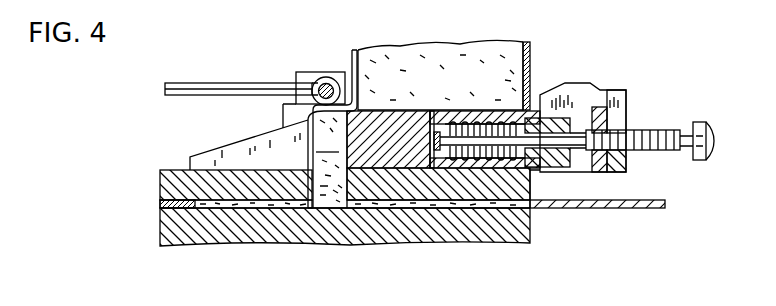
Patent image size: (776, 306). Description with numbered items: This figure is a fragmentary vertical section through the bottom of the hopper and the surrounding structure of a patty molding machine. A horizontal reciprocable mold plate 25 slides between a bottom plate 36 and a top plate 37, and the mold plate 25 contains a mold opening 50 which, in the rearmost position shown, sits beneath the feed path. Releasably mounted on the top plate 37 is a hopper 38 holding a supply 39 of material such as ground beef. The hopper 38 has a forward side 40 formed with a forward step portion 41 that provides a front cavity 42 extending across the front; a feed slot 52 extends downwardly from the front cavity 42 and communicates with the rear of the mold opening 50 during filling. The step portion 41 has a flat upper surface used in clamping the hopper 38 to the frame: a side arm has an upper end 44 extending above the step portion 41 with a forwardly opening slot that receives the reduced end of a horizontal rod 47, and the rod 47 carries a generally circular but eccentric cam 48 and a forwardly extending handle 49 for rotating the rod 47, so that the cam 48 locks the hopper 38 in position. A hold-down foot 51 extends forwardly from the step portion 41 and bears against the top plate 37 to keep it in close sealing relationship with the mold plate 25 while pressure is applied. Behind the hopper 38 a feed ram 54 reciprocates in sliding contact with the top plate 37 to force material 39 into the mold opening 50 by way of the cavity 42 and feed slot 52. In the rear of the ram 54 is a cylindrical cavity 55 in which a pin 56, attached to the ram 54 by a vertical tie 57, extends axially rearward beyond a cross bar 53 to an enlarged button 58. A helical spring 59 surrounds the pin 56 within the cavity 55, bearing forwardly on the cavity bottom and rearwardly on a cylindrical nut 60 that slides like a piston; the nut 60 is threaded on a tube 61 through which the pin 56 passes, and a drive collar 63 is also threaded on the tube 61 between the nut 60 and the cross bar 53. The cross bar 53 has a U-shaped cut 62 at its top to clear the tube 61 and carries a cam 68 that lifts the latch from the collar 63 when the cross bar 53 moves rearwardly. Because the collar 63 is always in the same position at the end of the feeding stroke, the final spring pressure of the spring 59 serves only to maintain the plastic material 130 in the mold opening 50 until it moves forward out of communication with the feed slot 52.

The mold plate 25 is at (621, 210).
The bottom plate 36 is at (161, 232).
The top plate 37 is at (160, 184).
The hopper 38 is at (531, 52).
The supply of material 39 is at (430, 43).
The forward side 40 is at (355, 50).
The forward step portion 41 is at (300, 131).
The front cavity 42 is at (330, 159).
The upper end of arm 44 is at (305, 72).
The horizontal rod 47 is at (311, 89).
The cam 48 is at (331, 77).
The handle 49 is at (205, 86).
The mold opening 50 is at (232, 208).
The hold-down foot 51 is at (222, 152).
The feed slot 52 is at (347, 181).
The cross bar 53 is at (626, 157).
The feed ram 54 is at (387, 109).
The cylindrical cavity 55 is at (463, 123).
The pin 56 is at (684, 134).
The vertical tie 57 is at (430, 127).
The enlarged button 58 is at (711, 138).
The helical spring 59 is at (530, 78).
The cylindrical nut 60 is at (546, 163).
The threaded tube 61 is at (649, 131).
The U-shaped cut 62 is at (616, 124).
The drive collar 63 is at (601, 110).
The cam 68 is at (579, 83).
The plastic material 130 is at (287, 207).